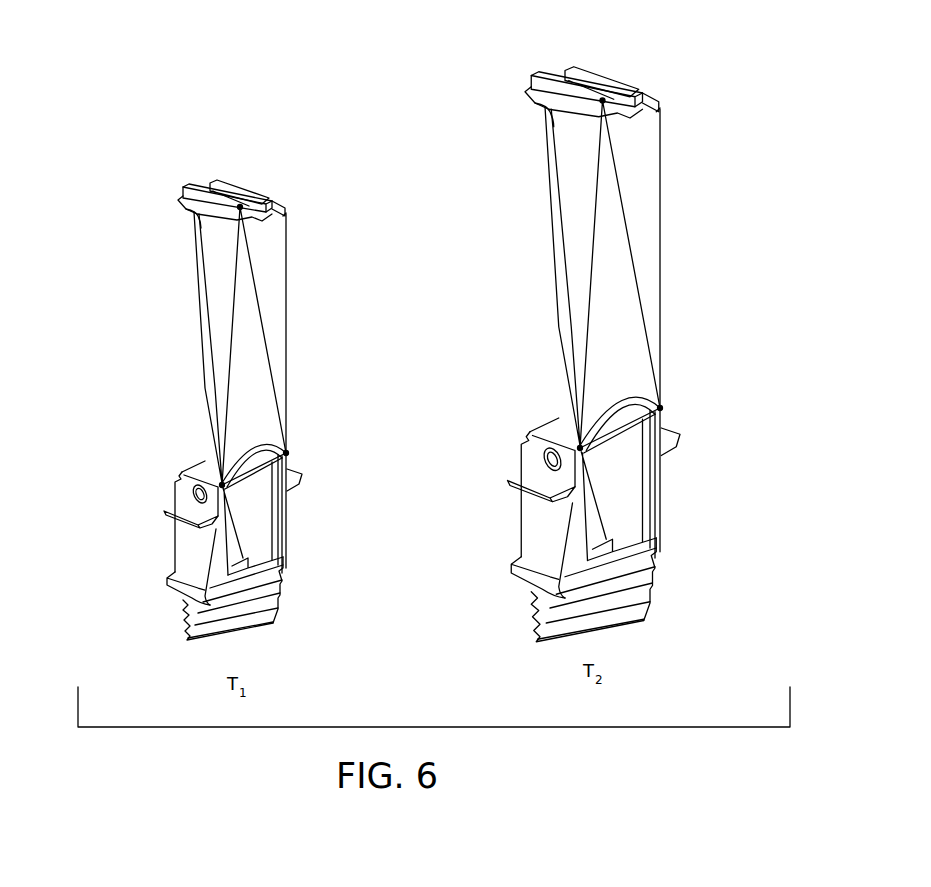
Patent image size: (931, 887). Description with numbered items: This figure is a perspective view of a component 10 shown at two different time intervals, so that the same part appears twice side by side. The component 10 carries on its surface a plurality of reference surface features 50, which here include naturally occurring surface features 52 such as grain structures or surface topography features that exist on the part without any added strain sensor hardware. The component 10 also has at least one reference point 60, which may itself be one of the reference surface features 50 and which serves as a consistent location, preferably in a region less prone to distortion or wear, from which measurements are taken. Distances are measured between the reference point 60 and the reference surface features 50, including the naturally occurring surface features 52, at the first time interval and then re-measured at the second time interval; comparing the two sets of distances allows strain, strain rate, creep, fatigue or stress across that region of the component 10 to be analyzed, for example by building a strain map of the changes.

The component 10 is at (420, 330).
The reference surface features 50 is at (183, 259).
The naturally occurring surface features 52 is at (218, 484).
The reference point 60 is at (240, 204).